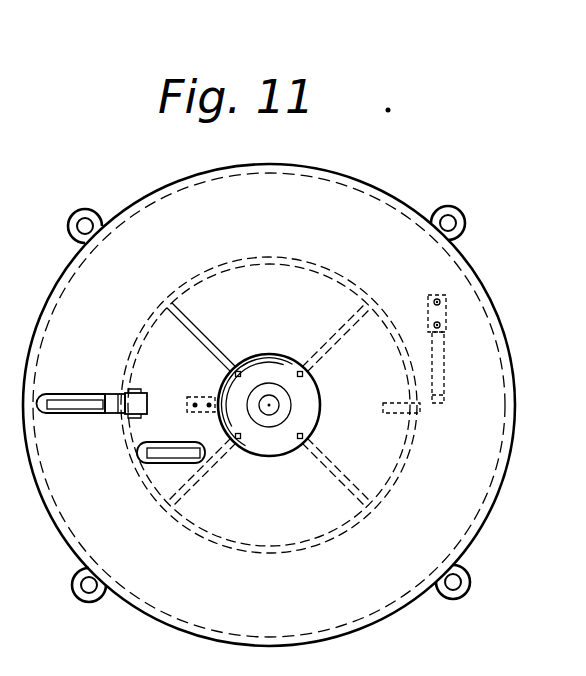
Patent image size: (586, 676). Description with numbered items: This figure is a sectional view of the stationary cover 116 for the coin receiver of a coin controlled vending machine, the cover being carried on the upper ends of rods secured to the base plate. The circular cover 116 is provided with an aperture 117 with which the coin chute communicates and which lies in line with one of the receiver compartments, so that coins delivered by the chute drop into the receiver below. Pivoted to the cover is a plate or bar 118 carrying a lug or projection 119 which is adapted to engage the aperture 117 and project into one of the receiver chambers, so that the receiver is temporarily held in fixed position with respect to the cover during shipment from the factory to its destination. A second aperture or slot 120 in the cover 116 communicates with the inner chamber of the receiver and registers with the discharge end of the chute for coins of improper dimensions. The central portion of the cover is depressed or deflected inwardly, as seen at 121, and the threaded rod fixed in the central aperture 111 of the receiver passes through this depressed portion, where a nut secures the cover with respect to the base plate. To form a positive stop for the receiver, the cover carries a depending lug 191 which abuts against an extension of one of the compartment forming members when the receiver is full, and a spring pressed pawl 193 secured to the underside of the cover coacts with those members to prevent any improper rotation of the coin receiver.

The central aperture 111 is at (273, 403).
The stationary cover 116 is at (269, 405).
The aperture 117 is at (70, 405).
The plate or bar 118 is at (116, 414).
The lug or projection 119 is at (135, 407).
The aperture or slot 120 is at (178, 456).
The depressed central portion 121 is at (257, 365).
The depending lug 191 is at (390, 404).
The spring pressed pawl 193 is at (445, 375).